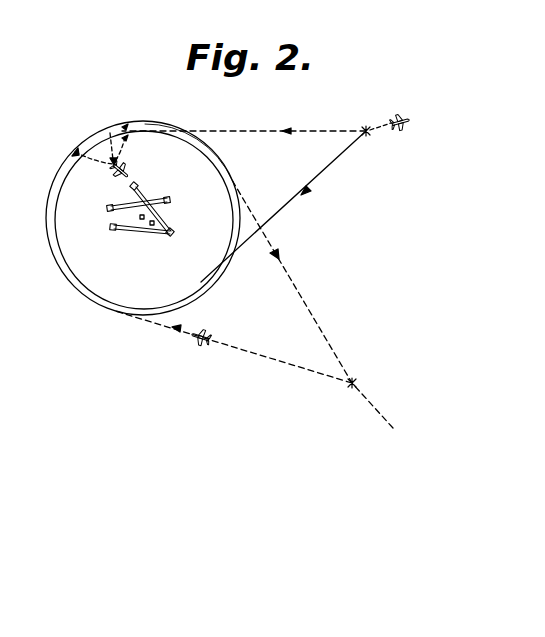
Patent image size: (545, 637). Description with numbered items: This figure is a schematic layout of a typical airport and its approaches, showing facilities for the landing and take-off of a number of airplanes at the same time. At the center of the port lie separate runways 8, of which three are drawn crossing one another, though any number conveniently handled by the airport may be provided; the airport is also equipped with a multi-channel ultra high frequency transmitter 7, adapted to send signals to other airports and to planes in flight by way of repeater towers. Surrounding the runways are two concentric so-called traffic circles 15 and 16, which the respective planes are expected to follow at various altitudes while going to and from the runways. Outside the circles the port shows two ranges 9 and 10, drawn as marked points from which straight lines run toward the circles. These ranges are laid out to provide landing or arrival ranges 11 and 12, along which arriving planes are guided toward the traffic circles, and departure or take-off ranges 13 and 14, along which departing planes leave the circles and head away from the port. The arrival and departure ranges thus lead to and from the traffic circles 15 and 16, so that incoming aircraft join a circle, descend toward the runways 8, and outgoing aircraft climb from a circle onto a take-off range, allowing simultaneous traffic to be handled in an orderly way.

The multi-channel ultra high frequency transmitter 7 is at (142, 226).
The runways 8 is at (143, 193).
The range 9 is at (367, 136).
The range 10 is at (357, 383).
The landing or arrival range 11 is at (270, 131).
The landing or arrival range 12 is at (293, 272).
The departure or take-off range 13 is at (318, 180).
The departure or take-off range 14 is at (247, 351).
The traffic circle 15 is at (213, 152).
The traffic circle 16 is at (212, 163).